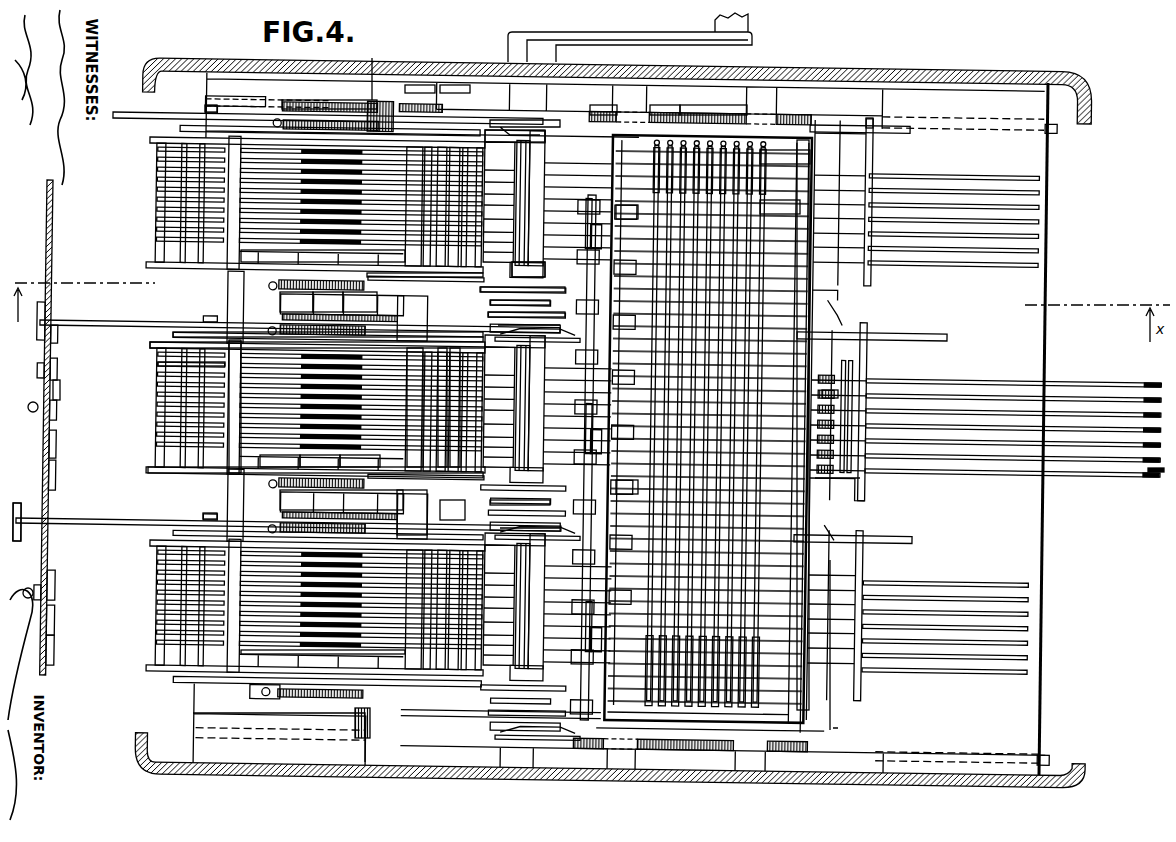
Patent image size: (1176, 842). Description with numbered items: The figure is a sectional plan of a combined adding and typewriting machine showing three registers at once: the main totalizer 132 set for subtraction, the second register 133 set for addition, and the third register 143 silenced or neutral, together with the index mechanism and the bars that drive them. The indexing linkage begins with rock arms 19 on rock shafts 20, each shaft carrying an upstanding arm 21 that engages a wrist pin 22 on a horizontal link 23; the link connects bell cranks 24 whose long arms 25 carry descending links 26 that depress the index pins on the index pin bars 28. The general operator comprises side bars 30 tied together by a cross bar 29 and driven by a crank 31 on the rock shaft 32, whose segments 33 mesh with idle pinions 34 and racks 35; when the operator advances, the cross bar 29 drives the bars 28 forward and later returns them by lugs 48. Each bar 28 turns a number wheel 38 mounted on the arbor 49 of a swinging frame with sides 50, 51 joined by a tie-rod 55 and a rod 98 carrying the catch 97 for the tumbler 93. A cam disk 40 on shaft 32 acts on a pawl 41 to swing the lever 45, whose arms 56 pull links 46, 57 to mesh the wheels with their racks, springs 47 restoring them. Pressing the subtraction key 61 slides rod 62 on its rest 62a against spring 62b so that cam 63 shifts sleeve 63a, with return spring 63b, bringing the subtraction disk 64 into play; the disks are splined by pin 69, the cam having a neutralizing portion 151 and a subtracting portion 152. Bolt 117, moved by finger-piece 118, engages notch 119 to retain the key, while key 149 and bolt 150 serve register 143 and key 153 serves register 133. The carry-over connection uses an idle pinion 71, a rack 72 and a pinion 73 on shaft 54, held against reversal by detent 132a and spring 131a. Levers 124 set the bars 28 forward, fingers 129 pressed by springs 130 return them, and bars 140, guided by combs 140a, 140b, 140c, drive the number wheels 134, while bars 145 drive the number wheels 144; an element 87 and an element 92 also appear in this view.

The rock arm 19 is at (589, 457).
The rock shaft 20 is at (636, 490).
The upstanding arm 21 is at (650, 300).
The wrist pin 22 is at (648, 252).
The horizontal link 23 is at (788, 292).
The bell crank 24 is at (766, 214).
The long arm 25 is at (763, 676).
The depressor link 26 is at (655, 155).
The index pin bar 28 is at (165, 405).
The cross bar 29 is at (821, 645).
The side bar 30 is at (842, 764).
The crank 31 is at (752, 45).
The rock shaft 32 is at (517, 358).
The segment 33 is at (581, 424).
The idle pinion 34 is at (629, 424).
The rack 35 is at (695, 108).
The number wheel 38 is at (285, 462).
The cam disk 40 is at (548, 710).
The pawl 41 is at (475, 712).
The lever 45 is at (341, 500).
The link 46 is at (270, 505).
The spring 47 is at (287, 393).
The lug 48 is at (845, 385).
The arbor 49 is at (280, 300).
The frame side 50 is at (148, 470).
The frame side 51 is at (150, 345).
The shaft 54 is at (420, 512).
The tie-rod 55 is at (448, 385).
The lever arm 56 is at (328, 302).
The link 57 is at (296, 302).
The subtraction key 61 is at (40, 328).
The subtraction rod 62 is at (908, 333).
The rest 62a is at (205, 518).
The returning spring 62b is at (470, 500).
The cam 63 is at (575, 545).
The sleeve 63a is at (530, 675).
The returning spring 63b is at (540, 298).
The cam disk 64 is at (540, 470).
The pin 69 is at (545, 503).
The idle pinion 71 is at (465, 103).
The rack 72 is at (380, 62).
The pinion 73 is at (436, 103).
The pawl 87 is at (448, 435).
The bar 92 is at (158, 364).
The tumbler 93 is at (330, 462).
The catch 97 is at (365, 462).
The rod 98 is at (411, 409).
The bolt 117 is at (58, 383).
The finger-piece 118 is at (22, 500).
The notch 119 is at (68, 300).
The denomination selecting lever 124 is at (1150, 470).
The pivoted finger 129 is at (850, 470).
The spring 130 is at (840, 375).
The spring 131a is at (365, 760).
The main totalizer 132 is at (290, 374).
The detent 132a is at (365, 738).
The second register 133 is at (302, 184).
The number wheel 134 is at (288, 250).
The bar 140 is at (985, 255).
The forward guide-comb 140a is at (215, 280).
The forward guide-comb 140b is at (230, 260).
The rear guide comb 140c is at (876, 548).
The third register 143 is at (294, 584).
The number wheel 144 is at (262, 650).
The bar 145 is at (915, 665).
The subtraction key 149 is at (11, 531).
The bolt 150 is at (56, 540).
The neutralizing portion 151 is at (528, 550).
The cam portion 152 is at (505, 325).
The subtraction key 153 is at (135, 119).